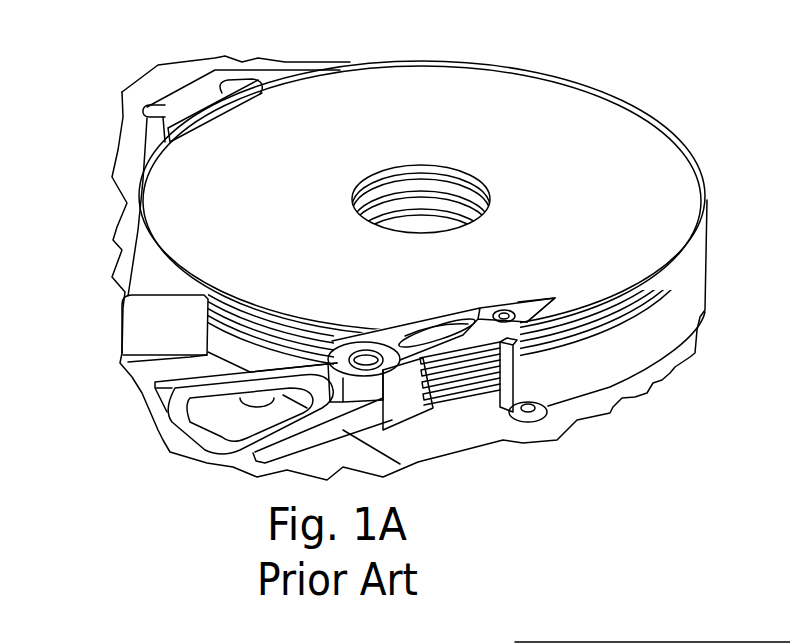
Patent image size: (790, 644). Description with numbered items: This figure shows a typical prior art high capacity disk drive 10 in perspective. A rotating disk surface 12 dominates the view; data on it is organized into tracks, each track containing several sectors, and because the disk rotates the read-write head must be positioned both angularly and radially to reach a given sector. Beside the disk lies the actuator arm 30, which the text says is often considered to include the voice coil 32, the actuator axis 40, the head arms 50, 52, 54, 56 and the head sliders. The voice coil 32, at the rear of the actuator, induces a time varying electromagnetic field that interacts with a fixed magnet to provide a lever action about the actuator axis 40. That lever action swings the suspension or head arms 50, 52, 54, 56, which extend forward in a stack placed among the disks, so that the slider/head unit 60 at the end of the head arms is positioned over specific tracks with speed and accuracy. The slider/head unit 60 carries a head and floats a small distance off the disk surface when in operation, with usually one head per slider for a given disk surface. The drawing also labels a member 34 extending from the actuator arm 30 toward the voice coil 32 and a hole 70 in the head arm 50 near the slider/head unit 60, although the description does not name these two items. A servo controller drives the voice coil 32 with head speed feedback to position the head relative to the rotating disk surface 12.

The high capacity disk drive 10 is at (106, 58).
The rotating disk surface 12 is at (622, 127).
The actuator arm 30 is at (400, 410).
The voice coil 32 is at (232, 443).
The coil support arm 34 is at (318, 428).
The actuator axis 40 is at (362, 352).
The head arm 50 is at (466, 310).
The head arm 52 is at (463, 363).
The head arm 54 is at (457, 367).
The head arm 56 is at (450, 368).
The slider/head unit 60 is at (533, 296).
The suspension hole 70 is at (504, 305).